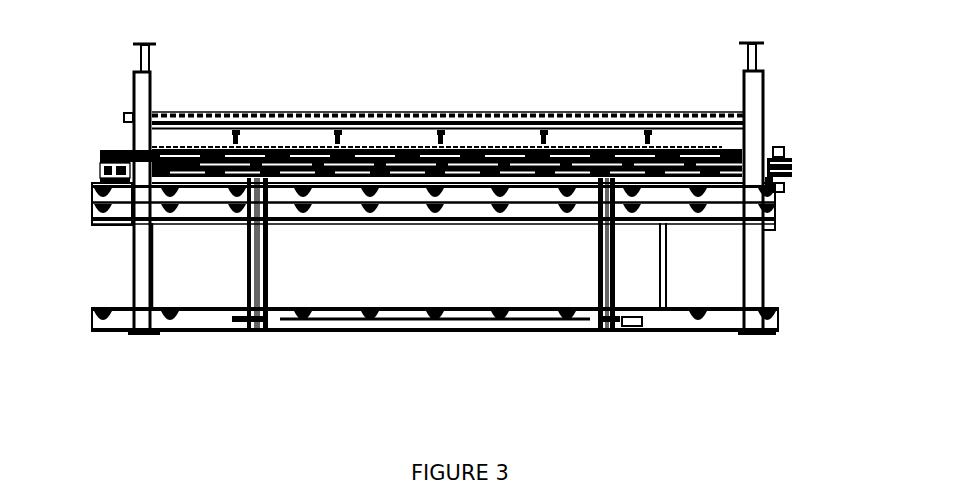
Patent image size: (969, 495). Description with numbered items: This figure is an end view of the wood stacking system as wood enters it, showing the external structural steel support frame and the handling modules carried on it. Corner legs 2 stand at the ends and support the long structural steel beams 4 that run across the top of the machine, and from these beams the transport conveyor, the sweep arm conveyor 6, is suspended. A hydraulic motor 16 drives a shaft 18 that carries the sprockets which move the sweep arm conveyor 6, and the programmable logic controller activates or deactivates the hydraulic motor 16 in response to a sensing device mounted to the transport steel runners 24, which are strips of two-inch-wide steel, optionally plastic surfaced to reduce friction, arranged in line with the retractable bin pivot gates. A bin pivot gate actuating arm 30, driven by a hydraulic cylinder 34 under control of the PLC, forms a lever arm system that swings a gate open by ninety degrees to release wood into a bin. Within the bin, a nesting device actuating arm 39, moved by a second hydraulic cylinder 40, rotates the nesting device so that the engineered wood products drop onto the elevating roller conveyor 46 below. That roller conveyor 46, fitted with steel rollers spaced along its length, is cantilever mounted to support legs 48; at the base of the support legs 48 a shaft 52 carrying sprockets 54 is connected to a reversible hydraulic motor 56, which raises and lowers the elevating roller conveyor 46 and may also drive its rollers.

The corner legs 2 is at (138, 131).
The long structural steel beams 4 is at (141, 47).
The sweep arm conveyor 6 is at (324, 112).
The hydraulic motor 16 is at (126, 112).
The shaft 18 is at (482, 112).
The transport steel runners 24 is at (235, 131).
The bin pivot gate actuating arm 30 is at (100, 161).
The hydraulic cylinder 34 is at (793, 162).
The nesting device actuating arm 39 is at (147, 174).
The hydraulic cylinder 40 is at (786, 178).
The elevating roller conveyor 46 is at (116, 197).
The support legs 48 is at (273, 263).
The shaft 52 is at (457, 324).
The sprockets 54 is at (243, 331).
The reversible hydraulic motor 56 is at (638, 332).